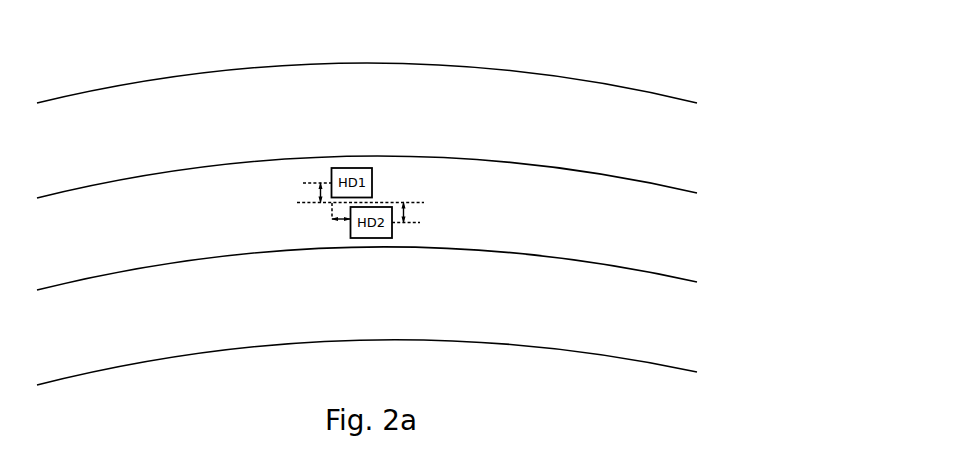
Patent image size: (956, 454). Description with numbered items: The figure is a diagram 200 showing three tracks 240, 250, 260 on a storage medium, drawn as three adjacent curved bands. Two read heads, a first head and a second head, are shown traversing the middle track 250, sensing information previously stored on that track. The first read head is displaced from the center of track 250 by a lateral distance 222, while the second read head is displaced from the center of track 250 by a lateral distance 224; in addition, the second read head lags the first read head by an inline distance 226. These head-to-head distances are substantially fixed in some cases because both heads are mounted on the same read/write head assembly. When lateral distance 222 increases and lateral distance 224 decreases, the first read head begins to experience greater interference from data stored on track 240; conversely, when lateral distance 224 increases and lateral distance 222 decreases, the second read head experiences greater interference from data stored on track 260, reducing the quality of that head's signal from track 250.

The diagram 200 is at (431, 202).
The track 240 is at (648, 144).
The track 250 is at (649, 232).
The track 260 is at (649, 322).
The lateral distance 222 is at (318, 188).
The lateral distance 224 is at (405, 218).
The inline distance 226 is at (336, 220).